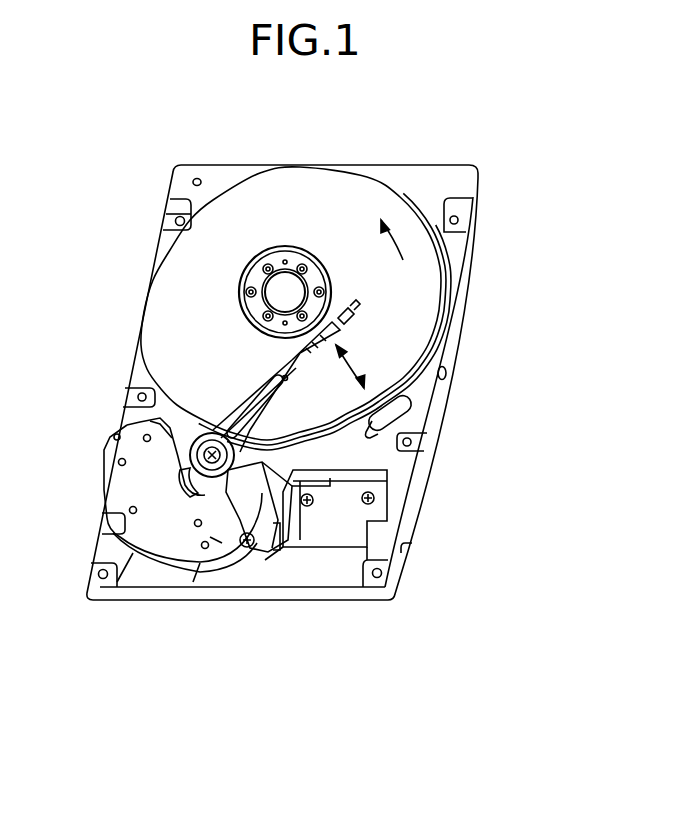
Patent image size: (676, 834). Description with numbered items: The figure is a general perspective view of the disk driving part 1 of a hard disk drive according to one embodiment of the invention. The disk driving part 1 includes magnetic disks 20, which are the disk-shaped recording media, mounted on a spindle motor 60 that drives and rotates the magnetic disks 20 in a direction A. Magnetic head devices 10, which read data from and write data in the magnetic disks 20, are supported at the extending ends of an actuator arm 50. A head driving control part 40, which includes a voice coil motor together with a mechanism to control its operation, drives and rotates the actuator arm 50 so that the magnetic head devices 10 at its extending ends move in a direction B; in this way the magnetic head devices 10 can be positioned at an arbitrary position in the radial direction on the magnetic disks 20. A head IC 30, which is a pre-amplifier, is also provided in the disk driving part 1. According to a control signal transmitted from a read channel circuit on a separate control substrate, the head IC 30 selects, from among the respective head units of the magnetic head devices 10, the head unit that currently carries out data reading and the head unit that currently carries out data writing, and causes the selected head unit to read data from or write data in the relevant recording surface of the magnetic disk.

The disk driving part 1 is at (55, 113).
The magnetic head devices 10 is at (336, 331).
The magnetic disks 20 is at (212, 250).
The head IC (pre-amplifier) 30 is at (247, 457).
The head driving control part 40 is at (137, 463).
The actuator arm 50 is at (240, 428).
The spindle motor 60 is at (265, 252).
The direction A is at (400, 250).
The direction B is at (357, 362).